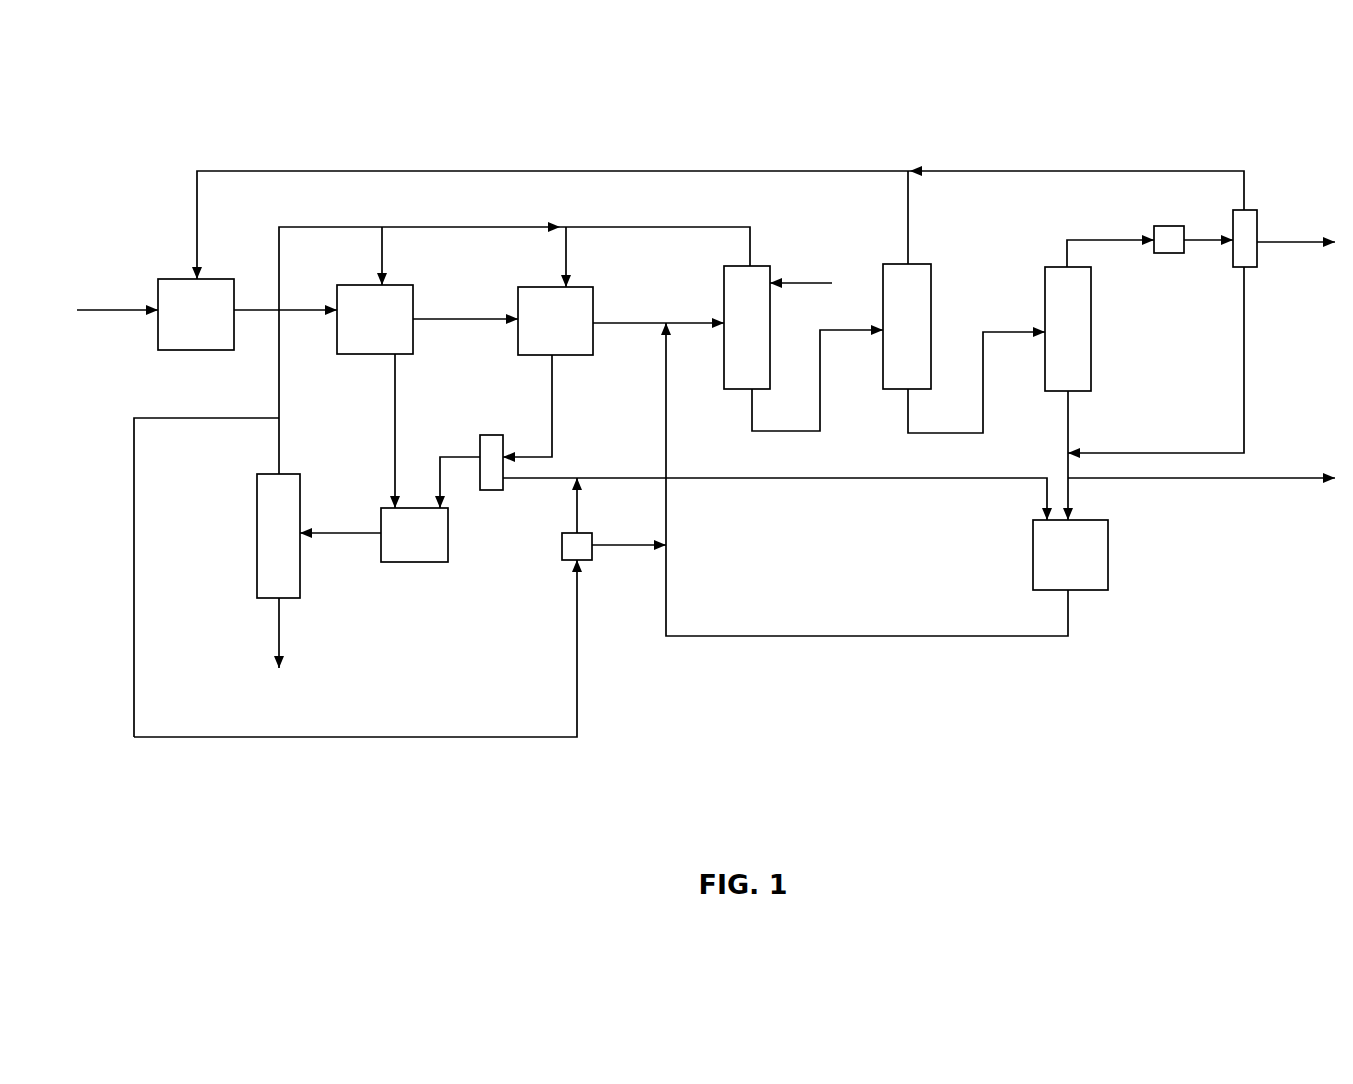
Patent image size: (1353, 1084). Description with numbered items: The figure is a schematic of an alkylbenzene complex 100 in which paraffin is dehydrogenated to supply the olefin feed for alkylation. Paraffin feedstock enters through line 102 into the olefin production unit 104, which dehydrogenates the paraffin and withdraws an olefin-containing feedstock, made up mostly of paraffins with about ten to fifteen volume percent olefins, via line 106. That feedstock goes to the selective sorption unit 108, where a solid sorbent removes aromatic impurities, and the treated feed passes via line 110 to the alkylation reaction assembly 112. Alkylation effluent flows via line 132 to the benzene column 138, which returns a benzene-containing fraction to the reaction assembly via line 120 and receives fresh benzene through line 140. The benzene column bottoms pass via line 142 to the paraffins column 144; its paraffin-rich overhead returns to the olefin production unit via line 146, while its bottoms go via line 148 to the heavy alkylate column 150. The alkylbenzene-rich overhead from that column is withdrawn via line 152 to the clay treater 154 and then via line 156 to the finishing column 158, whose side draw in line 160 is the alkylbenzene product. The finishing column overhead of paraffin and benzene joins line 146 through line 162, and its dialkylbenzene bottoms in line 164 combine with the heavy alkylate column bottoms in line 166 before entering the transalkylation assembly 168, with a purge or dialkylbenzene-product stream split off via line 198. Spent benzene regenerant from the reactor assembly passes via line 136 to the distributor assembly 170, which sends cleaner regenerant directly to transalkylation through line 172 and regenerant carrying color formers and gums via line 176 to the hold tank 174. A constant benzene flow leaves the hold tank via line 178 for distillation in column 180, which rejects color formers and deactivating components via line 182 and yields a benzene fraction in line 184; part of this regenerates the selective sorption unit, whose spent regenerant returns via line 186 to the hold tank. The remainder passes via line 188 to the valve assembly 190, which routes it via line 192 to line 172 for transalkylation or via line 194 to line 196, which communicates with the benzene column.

The alkylbenzene complex 100 is at (245, 772).
The line 102 is at (148, 316).
The olefin production unit 104 is at (175, 297).
The line 106 is at (290, 315).
The selective sorption unit 108 is at (385, 300).
The line 110 is at (425, 320).
The alkylation reaction assembly 112 is at (548, 305).
The line 120 is at (615, 226).
The line 132 is at (608, 323).
The line 136 is at (556, 376).
The benzene column 138 is at (740, 282).
The line 140 is at (808, 283).
The line 142 is at (748, 400).
The paraffins column 144 is at (898, 330).
The line 146 is at (905, 228).
The line 148 is at (900, 400).
The heavy alkylate column 150 is at (1043, 302).
The line 152 is at (1098, 240).
The clay treater 154 is at (1168, 237).
The line 156 is at (1215, 250).
The finishing column 158 is at (1238, 228).
The line 160 is at (1278, 241).
The line 162 is at (1205, 172).
The line 164 is at (1248, 358).
The line 166 is at (1072, 400).
The transalkylation assembly 168 is at (1090, 550).
The distributor assembly 170 is at (488, 443).
The line 172 is at (820, 480).
The hold tank 174 is at (418, 545).
The line 176 is at (466, 456).
The line 178 is at (320, 533).
The column 180 is at (273, 570).
The line 182 is at (280, 612).
The line 184 is at (278, 432).
The line 186 is at (393, 480).
The line 188 is at (137, 717).
The valve assembly 190 is at (560, 545).
The line 192 is at (580, 498).
The line 194 is at (650, 547).
The line 196 is at (670, 620).
The line 198 is at (1297, 481).